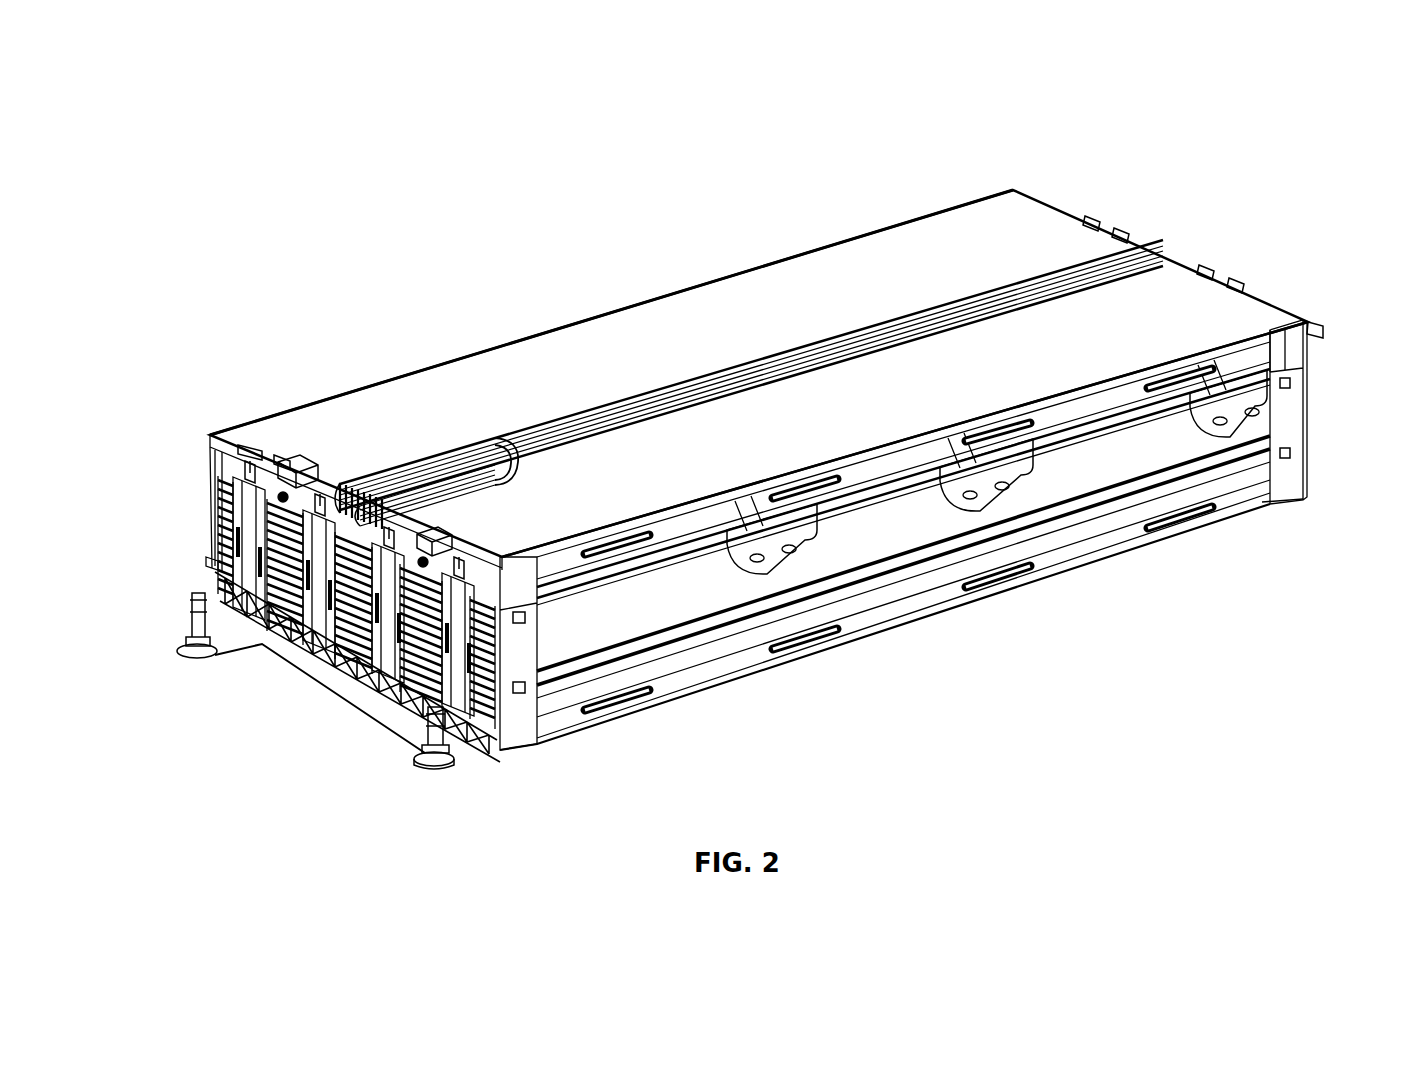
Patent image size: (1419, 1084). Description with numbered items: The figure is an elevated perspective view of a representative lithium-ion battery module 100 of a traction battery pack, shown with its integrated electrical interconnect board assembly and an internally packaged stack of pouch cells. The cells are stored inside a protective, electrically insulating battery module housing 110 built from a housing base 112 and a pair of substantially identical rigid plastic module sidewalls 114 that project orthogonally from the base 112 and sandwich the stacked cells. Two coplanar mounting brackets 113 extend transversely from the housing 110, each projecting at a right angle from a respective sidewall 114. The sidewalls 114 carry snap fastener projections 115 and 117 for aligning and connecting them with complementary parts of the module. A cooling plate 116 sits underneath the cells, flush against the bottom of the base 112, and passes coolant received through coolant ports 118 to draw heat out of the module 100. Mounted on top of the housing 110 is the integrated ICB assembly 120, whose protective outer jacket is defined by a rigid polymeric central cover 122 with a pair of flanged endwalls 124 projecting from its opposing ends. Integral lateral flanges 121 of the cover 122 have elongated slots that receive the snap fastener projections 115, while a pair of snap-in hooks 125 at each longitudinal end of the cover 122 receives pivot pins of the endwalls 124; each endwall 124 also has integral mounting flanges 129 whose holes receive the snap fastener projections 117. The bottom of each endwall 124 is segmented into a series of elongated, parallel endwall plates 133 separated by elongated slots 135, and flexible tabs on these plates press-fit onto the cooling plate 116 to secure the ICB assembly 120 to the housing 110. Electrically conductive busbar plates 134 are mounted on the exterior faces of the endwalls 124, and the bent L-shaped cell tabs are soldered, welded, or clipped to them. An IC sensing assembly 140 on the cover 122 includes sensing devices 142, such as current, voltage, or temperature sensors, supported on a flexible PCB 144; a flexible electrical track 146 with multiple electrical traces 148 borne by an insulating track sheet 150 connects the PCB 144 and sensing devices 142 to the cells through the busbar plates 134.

The battery module 100 is at (322, 168).
The battery module housing 110 is at (1240, 606).
The housing base 112 is at (808, 690).
The mounting brackets 113 is at (1290, 345).
The module sidewalls 114 is at (1254, 486).
The snap fastener projections 115 is at (1180, 530).
The cooling plate 116 is at (432, 770).
The snap fastener projections 117 is at (1292, 452).
The coolant ports 118 is at (188, 614).
The integrated interconnect board (ICB) assembly 120 is at (660, 272).
The lateral flanges 121 is at (700, 545).
The central cover 122 is at (907, 247).
The flanged endwalls 124 is at (1098, 222).
The snap-in hooks 125 is at (280, 472).
The mounting flanges 129 is at (949, 581).
The endwall plates 133 is at (250, 646).
The busbar plates 134 is at (318, 476).
The elongated slots 135 is at (262, 612).
The integrated circuit (IC) sensing assembly 140 is at (445, 396).
The sensing devices 142 is at (470, 470).
The flexible printed circuit board (PCB) 144 is at (358, 480).
The flexible electrical track 146 is at (846, 300).
The electrical traces 148 is at (876, 335).
The track sheet 150 is at (807, 343).